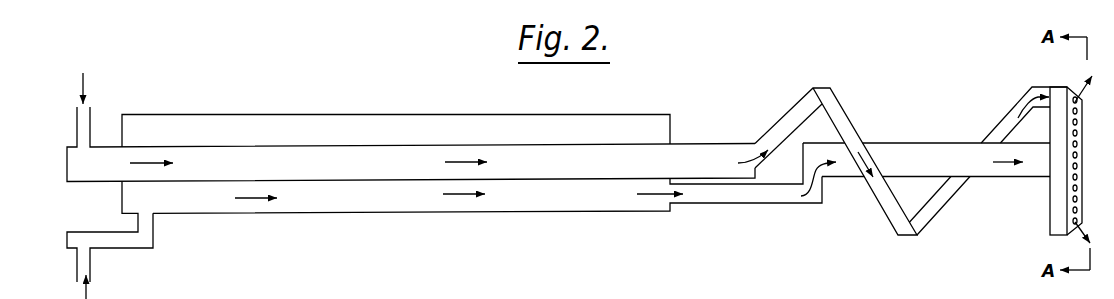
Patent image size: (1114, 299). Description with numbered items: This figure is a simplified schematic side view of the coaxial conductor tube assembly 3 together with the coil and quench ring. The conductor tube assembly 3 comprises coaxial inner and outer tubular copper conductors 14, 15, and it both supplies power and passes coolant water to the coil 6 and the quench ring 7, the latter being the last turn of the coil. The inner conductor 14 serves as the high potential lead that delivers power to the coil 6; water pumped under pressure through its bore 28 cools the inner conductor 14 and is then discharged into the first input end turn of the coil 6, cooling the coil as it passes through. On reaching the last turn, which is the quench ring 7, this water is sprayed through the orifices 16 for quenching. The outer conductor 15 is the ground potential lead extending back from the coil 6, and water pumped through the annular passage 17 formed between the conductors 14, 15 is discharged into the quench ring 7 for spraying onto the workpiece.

The coaxial conductor tube assembly 3 is at (447, 107).
The induction coil 6 is at (838, 104).
The quench ring 7 is at (1053, 217).
The inner conductor 14 is at (378, 180).
The outer conductor 15 is at (373, 113).
The orifices 16 is at (1078, 203).
The annular passage 17 is at (534, 198).
The bore 28 is at (562, 158).